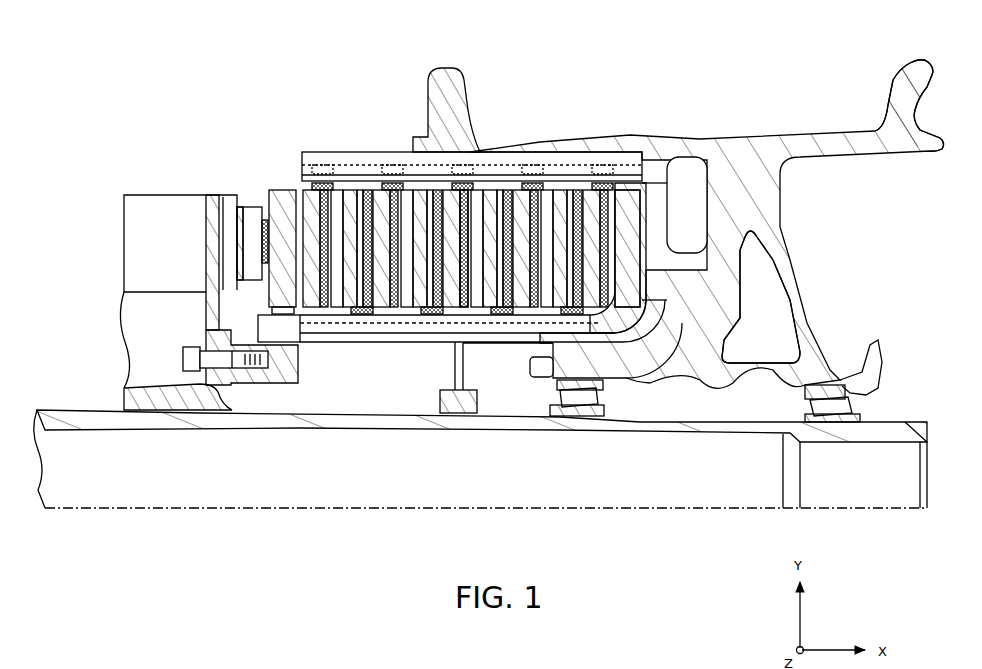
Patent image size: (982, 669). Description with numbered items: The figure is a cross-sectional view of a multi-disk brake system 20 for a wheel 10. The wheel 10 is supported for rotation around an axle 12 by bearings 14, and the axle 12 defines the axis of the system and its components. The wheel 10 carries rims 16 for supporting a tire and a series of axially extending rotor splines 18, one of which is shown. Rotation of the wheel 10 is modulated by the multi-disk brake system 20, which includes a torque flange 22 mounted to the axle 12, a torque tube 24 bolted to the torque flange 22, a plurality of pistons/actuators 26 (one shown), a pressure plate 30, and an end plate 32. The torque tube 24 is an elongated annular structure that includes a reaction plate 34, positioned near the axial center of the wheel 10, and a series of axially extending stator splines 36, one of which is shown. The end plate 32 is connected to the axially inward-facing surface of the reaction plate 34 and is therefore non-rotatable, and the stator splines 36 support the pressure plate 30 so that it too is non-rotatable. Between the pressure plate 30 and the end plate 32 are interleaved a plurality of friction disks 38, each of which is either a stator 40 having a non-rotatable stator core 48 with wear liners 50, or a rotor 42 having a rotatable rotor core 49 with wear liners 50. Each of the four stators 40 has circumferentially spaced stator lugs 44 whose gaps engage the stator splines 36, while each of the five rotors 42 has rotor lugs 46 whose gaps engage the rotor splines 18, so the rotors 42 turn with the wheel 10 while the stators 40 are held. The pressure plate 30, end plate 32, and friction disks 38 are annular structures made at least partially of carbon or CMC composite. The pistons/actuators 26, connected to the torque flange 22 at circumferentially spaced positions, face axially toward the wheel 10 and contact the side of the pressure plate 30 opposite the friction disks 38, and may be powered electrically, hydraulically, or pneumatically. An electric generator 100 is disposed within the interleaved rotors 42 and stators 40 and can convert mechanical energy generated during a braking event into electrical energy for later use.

The wheel 10 is at (790, 126).
The axle 12 is at (722, 422).
The bearings 14 is at (600, 398).
The rims 16 is at (470, 72).
The rotor splines 18 is at (426, 156).
The multi-disk brake system 20 is at (207, 107).
The torque flange 22 is at (212, 345).
The torque tube 24 is at (356, 343).
The pistons/actuators 26 is at (248, 207).
The pressure plate 30 is at (268, 205).
The end plate 32 is at (640, 152).
The reaction plate 34 is at (672, 285).
The stator splines 36 is at (405, 334).
The friction disks 38 is at (296, 188).
The stator 40 is at (362, 316).
The rotor 42 is at (322, 181).
The stator lugs 44 is at (540, 330).
The rotor lugs 46 is at (502, 190).
The stator core 48 is at (645, 196).
The rotor core 49 is at (638, 228).
The wear liners 50 is at (577, 190).
The electric generator 100 is at (620, 288).